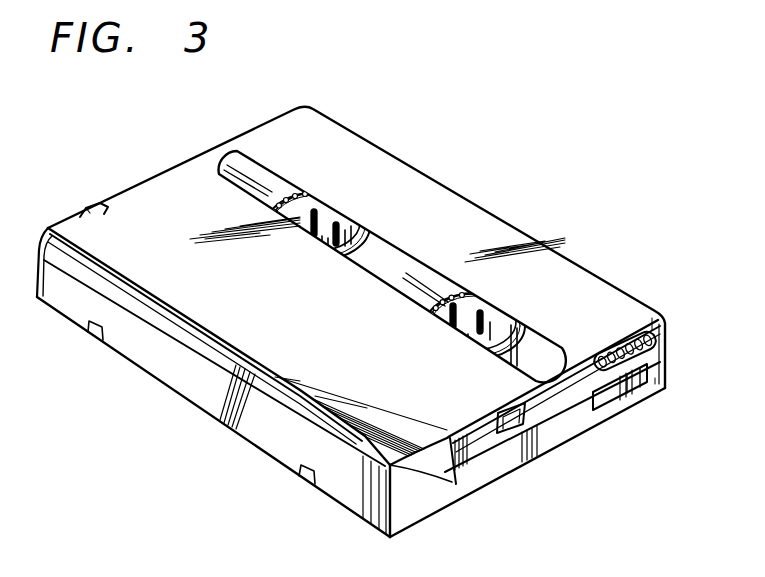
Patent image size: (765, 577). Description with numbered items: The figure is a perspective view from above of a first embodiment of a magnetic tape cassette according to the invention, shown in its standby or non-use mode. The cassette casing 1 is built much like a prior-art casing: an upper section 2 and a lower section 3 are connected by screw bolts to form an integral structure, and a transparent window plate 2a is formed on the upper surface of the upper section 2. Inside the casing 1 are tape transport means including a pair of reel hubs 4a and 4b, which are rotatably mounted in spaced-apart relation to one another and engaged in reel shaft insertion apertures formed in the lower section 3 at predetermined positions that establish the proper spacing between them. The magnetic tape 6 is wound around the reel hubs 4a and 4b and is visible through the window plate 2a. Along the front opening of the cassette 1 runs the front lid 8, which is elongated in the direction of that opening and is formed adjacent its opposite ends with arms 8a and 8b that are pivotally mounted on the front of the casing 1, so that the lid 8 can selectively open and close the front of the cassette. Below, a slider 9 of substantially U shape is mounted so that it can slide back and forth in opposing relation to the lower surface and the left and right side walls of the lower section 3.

The cassette casing 1 is at (711, 310).
The upper section 2 is at (668, 332).
The transparent window plate 2a is at (528, 345).
The lower section 3 is at (668, 366).
The reel hub 4a is at (303, 195).
The reel hub 4b is at (440, 292).
The magnetic tape 6 is at (386, 246).
The front lid 8 is at (178, 388).
The arm 8a is at (84, 210).
The arm 8b is at (447, 483).
The slider 9 is at (535, 438).